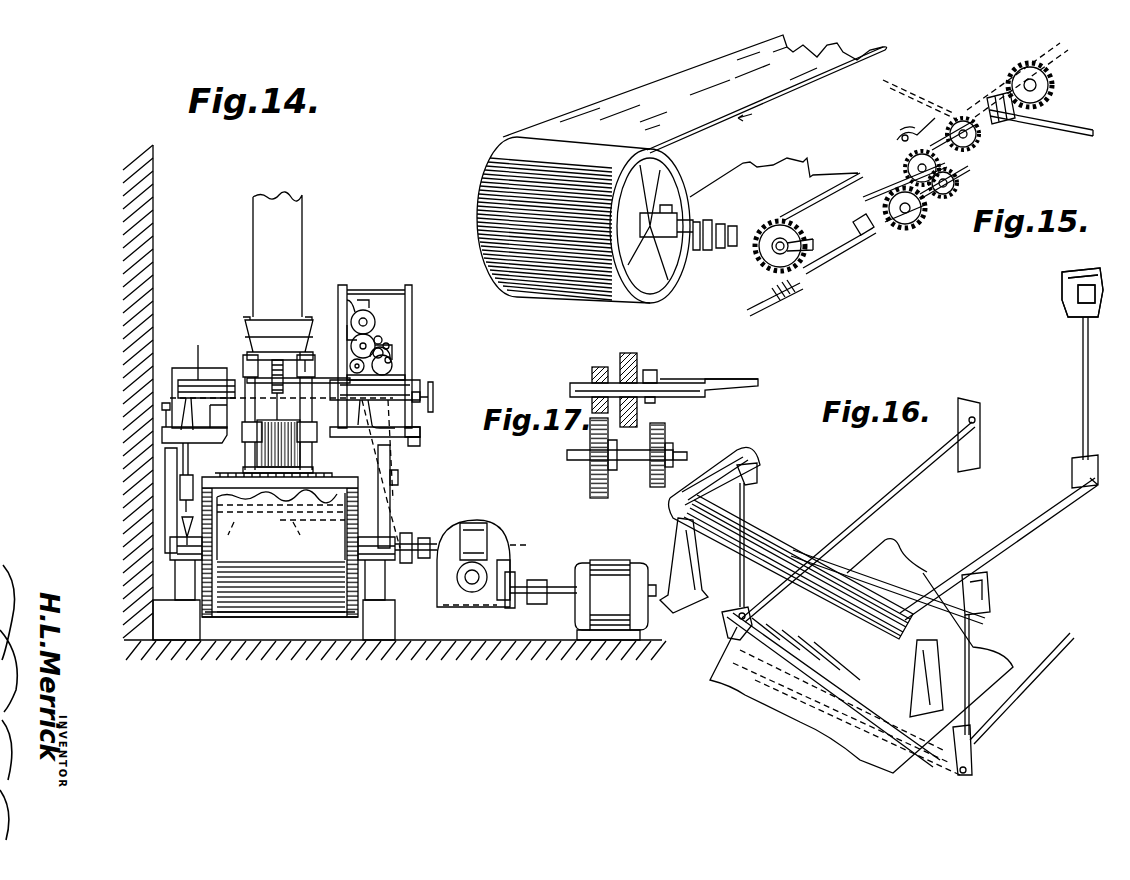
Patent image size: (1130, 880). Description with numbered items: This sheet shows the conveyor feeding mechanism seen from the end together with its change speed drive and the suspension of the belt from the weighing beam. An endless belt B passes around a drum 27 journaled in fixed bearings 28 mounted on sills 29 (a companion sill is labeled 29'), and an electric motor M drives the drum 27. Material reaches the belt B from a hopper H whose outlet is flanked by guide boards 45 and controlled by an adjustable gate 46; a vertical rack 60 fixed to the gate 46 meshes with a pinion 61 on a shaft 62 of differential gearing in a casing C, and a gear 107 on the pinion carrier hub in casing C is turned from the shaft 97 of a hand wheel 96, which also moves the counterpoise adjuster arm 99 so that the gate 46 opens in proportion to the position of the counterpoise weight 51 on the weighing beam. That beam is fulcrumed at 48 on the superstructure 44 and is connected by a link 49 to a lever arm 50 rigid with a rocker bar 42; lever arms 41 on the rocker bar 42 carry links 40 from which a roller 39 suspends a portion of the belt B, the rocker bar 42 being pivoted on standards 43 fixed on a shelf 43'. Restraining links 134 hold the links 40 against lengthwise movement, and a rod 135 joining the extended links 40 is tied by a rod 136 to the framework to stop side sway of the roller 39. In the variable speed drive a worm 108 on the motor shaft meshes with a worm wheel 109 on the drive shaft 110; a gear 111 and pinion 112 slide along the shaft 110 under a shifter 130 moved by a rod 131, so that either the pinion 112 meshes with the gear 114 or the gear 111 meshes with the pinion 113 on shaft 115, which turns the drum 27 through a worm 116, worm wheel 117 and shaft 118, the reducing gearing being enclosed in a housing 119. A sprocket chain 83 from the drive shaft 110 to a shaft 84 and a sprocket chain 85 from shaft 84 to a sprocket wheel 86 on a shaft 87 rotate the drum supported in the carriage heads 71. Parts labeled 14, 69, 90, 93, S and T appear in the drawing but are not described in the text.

In FIG. 14, the pawl 14 is at (380, 338).
In FIG. 14, the drum 27 is at (205, 642).
In FIG. 15, the drum 27 is at (675, 168).
In FIG. 14, the bearings 28 is at (172, 560).
In FIG. 14, the sills 29 is at (379, 620).
In FIG. 14, the pedestal base 29' is at (145, 614).
In FIG. 14, the roller 39 is at (183, 520).
In FIG. 16, the roller 39 is at (730, 640).
In FIG. 14, the links 40 is at (392, 462).
In FIG. 16, the links 40 is at (746, 506).
In FIG. 16, the lever arms 41 is at (752, 470).
In FIG. 14, the rocker bar 42 is at (200, 365).
In FIG. 16, the rocker bar 42 is at (820, 573).
In FIG. 14, the standards 43 is at (277, 411).
In FIG. 16, the standards 43 is at (801, 617).
In FIG. 14, the shelf 43' is at (130, 429).
In FIG. 14, the superstructure 44 is at (395, 368).
In FIG. 14, the guide boards 45 is at (245, 452).
In FIG. 14, the adjustable gate 46 is at (303, 450).
In FIG. 15, the fulcrum 48 is at (1060, 296).
In FIG. 16, the fulcrum 48 is at (1060, 296).
In FIG. 16, the link 49 is at (1087, 405).
In FIG. 16, the lever arm 50 is at (1000, 532).
In FIG. 14, the counterpoise weight 51 is at (388, 345).
In FIG. 14, the rack 60 is at (258, 340).
In FIG. 14, the pinion 61 is at (305, 350).
In FIG. 14, the shaft 62 is at (308, 365).
In FIG. 14, the bracket 69 is at (418, 434).
In FIG. 14, the carriage heads 71 is at (368, 338).
In FIG. 14, the sprocket chain 83 is at (437, 530).
In FIG. 15, the sprocket chain 83 is at (920, 98).
In FIG. 14, the shaft 84 is at (398, 522).
In FIG. 14, the sprocket chain 85 is at (422, 442).
In FIG. 14, the sprocket wheel 86 is at (395, 348).
In FIG. 14, the shaft 87 is at (395, 358).
In FIG. 14, the arm 90 is at (378, 325).
In FIG. 14, the frame 93 is at (352, 310).
In FIG. 14, the hand wheel 96 is at (435, 388).
In FIG. 14, the shaft 97 is at (425, 403).
In FIG. 14, the vertical arm 99 is at (385, 352).
In FIG. 14, the gear 107 is at (328, 385).
In FIG. 15, the worm 108 is at (1013, 118).
In FIG. 15, the worm wheel 109 is at (1040, 95).
In FIG. 14, the drive shaft 110 is at (505, 547).
In FIG. 15, the drive shaft 110 is at (1045, 78).
In FIG. 17, the drive shaft 110 is at (700, 388).
In FIG. 15, the gear 111 is at (905, 145).
In FIG. 17, the gear 111 is at (637, 362).
In FIG. 15, the pinion 112 is at (905, 160).
In FIG. 17, the pinion 112 is at (599, 367).
In FIG. 15, the pinion 113 is at (958, 182).
In FIG. 17, the pinion 113 is at (668, 432).
In FIG. 15, the gear 114 is at (912, 222).
In FIG. 17, the gear 114 is at (590, 472).
In FIG. 14, the shaft 115 is at (468, 582).
In FIG. 15, the shaft 115 is at (835, 258).
In FIG. 17, the shaft 115 is at (688, 452).
In FIG. 15, the worm 116 is at (775, 304).
In FIG. 15, the worm wheel 117 is at (758, 270).
In FIG. 14, the shaft 118 is at (432, 552).
In FIG. 15, the shaft 118 is at (720, 252).
In FIG. 14, the housing 119 is at (500, 535).
In FIG. 15, the shifter 130 is at (900, 128).
In FIG. 17, the shifter 130 is at (658, 372).
In FIG. 15, the rod 131 is at (972, 95).
In FIG. 17, the rod 131 is at (725, 379).
In FIG. 14, the restraining links 134 is at (400, 478).
In FIG. 16, the restraining links 134 is at (866, 503).
In FIG. 14, the rod 135 is at (233, 539).
In FIG. 16, the rod 135 is at (775, 668).
In FIG. 14, the rod 136 is at (312, 539).
In FIG. 16, the rod 136 is at (878, 762).
In FIG. 14, the endless belt B is at (280, 545).
In FIG. 15, the endless belt B is at (598, 118).
In FIG. 16, the endless belt B is at (899, 558).
In FIG. 14, the casing C is at (285, 391).
In FIG. 14, the hopper H is at (290, 335).
In FIG. 14, the electric motor M is at (610, 560).
In FIG. 14, the cam S is at (390, 360).
In FIG. 14, the cam T is at (411, 335).